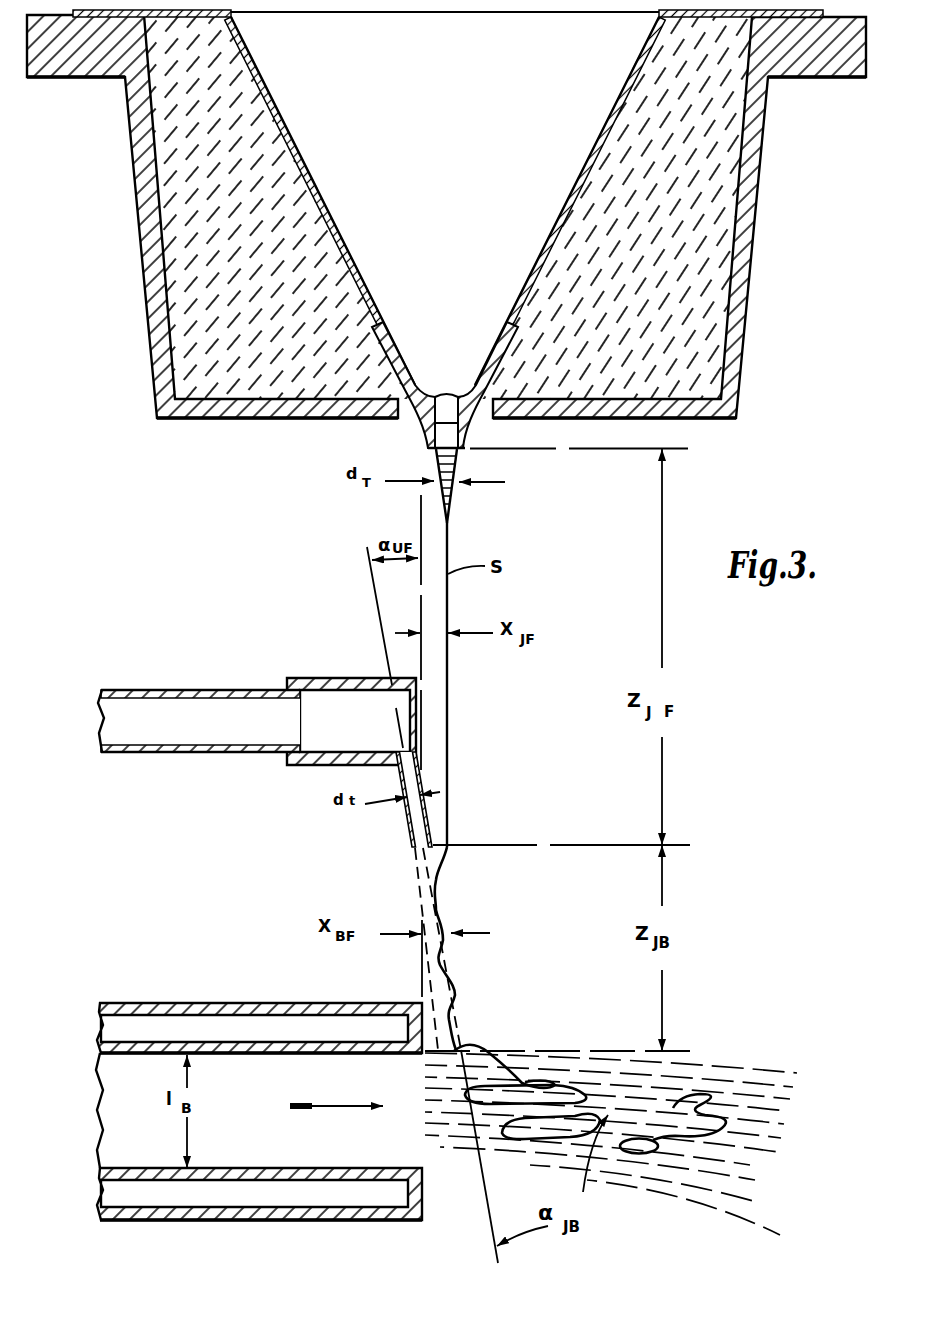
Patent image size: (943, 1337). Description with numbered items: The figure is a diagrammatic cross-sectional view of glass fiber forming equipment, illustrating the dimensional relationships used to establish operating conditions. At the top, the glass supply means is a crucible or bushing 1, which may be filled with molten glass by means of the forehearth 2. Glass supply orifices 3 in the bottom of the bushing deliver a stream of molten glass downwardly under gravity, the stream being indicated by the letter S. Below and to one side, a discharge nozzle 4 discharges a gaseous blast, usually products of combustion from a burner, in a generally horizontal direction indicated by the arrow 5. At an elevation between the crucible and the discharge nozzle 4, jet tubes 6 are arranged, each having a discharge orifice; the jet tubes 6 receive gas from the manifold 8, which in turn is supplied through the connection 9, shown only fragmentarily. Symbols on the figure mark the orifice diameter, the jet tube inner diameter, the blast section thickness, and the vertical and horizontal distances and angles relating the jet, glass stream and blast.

The crucible or bushing 1 is at (308, 408).
The forehearth 2 is at (707, 196).
The glass supply orifices 3 is at (462, 427).
The discharge nozzle 4 is at (320, 1210).
The arrow indicating the blast 5 is at (336, 1093).
The jet tubes 6 is at (400, 770).
The manifold 8 is at (340, 678).
The connection 9 is at (178, 689).